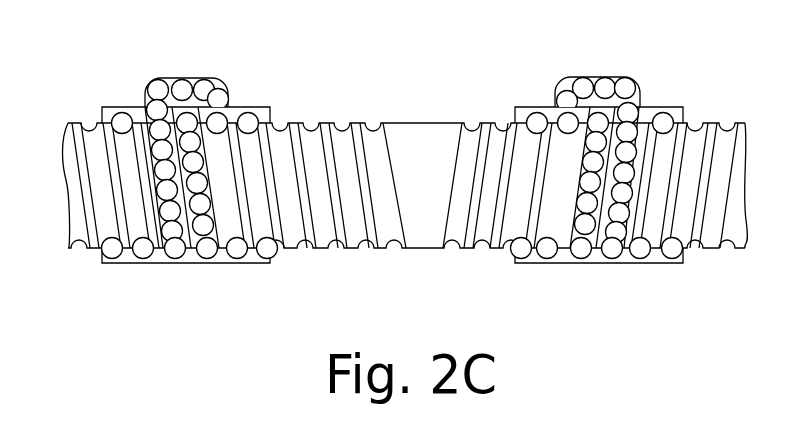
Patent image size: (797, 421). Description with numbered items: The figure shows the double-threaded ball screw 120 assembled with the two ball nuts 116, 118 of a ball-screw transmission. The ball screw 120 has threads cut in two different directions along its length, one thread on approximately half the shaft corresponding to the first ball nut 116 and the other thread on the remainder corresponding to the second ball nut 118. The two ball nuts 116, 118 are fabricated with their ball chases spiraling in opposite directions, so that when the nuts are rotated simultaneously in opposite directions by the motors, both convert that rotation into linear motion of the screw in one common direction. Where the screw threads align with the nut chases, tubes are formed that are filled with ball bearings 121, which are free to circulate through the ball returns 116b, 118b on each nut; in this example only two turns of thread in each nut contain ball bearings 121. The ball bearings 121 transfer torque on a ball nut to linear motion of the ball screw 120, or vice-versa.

The first ball nut 116 is at (110, 108).
The ball return 116b is at (215, 82).
The second ball nut 118 is at (667, 106).
The ball return 118b is at (565, 85).
The ball screw 120 is at (417, 127).
The ball bearings 121 is at (158, 85).